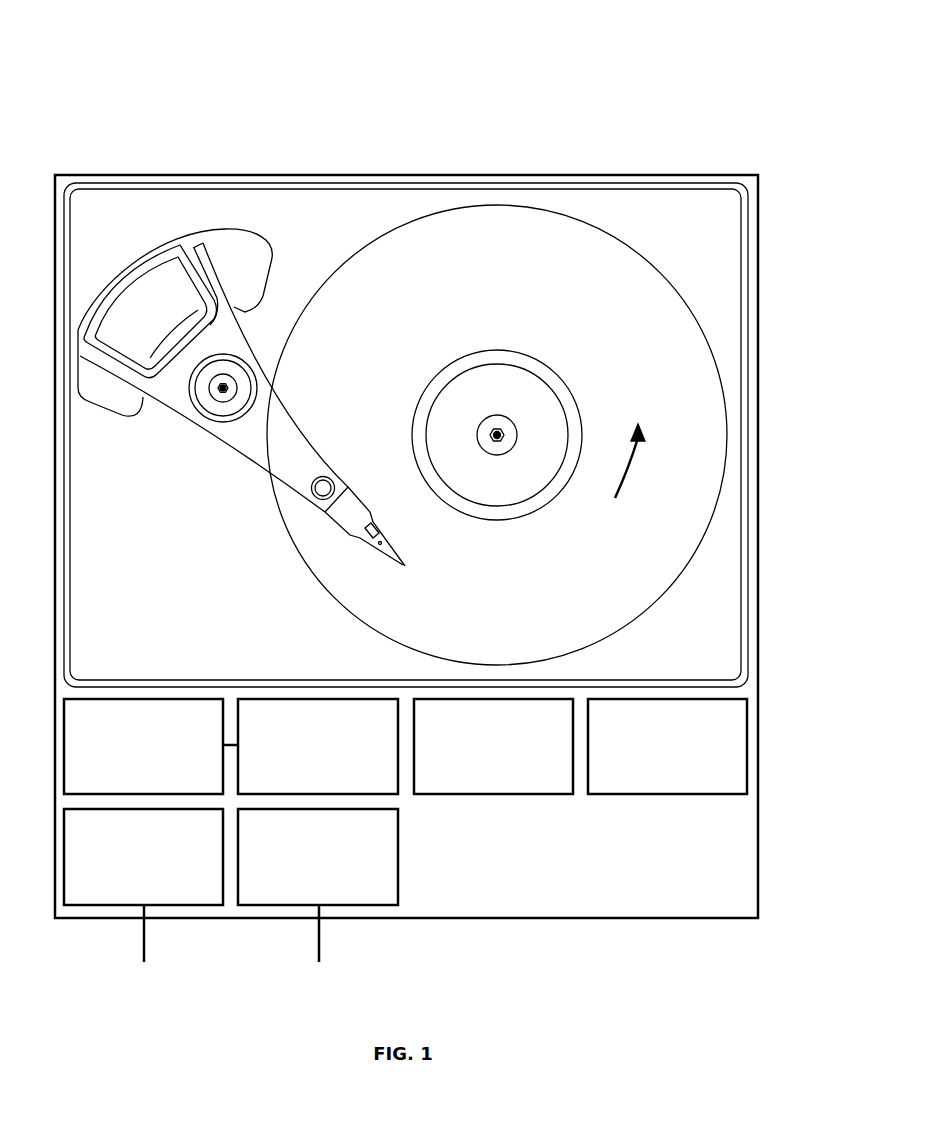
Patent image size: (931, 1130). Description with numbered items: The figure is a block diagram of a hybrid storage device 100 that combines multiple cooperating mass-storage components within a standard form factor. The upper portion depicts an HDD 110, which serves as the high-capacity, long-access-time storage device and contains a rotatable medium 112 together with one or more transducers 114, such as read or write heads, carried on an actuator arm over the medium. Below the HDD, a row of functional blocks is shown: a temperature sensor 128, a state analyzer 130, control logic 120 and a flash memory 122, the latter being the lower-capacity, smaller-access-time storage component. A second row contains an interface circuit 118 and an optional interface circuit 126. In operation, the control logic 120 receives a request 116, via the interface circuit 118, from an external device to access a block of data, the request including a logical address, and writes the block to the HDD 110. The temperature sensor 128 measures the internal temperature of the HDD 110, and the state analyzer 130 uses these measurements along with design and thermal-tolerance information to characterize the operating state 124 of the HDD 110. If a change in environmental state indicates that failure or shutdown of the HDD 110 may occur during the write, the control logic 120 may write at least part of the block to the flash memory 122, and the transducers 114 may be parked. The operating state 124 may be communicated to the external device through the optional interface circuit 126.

The hybrid storage device 100 is at (189, 77).
The HDD 110 is at (682, 208).
The rotatable medium 112 is at (453, 248).
The transducers 114 is at (405, 566).
The request 116 is at (144, 957).
The interface circuit 118 is at (143, 857).
The control logic 120 is at (493, 746).
The flash memory 122 is at (667, 746).
The operating state 124 is at (319, 966).
The optional interface circuit 126 is at (318, 857).
The temperature sensor 128 is at (143, 746).
The state analyzer 130 is at (318, 746).